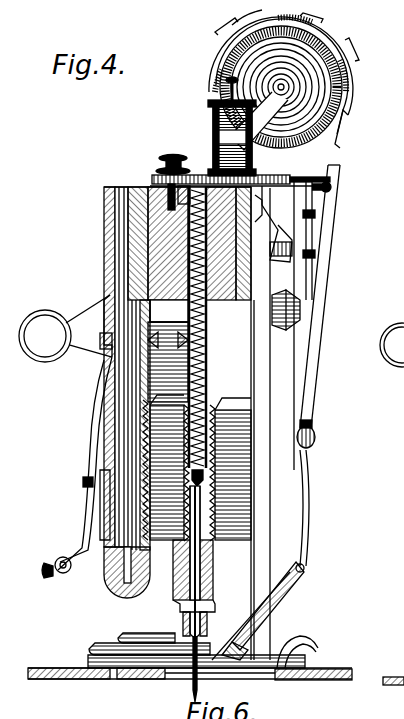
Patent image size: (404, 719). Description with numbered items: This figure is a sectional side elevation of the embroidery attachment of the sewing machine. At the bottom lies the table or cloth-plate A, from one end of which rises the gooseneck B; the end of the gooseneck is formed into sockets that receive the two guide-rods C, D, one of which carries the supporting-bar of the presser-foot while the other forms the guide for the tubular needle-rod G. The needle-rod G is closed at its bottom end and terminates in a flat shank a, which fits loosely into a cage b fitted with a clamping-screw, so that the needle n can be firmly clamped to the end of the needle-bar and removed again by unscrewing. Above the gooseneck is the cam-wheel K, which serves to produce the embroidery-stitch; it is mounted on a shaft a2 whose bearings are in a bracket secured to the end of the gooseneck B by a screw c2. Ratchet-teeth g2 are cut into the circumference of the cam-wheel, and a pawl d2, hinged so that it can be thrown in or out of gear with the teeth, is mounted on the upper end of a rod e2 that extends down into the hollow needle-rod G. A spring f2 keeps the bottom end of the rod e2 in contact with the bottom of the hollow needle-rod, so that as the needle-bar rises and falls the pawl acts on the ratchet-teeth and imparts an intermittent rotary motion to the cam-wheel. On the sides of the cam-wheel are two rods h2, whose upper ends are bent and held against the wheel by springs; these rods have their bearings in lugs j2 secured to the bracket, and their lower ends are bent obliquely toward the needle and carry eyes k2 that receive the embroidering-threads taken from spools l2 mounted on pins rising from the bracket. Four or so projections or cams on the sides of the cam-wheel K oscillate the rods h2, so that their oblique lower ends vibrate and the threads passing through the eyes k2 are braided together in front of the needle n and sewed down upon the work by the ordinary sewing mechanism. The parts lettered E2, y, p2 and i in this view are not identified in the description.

The cam-wheel K is at (328, 98).
The shaft a2 is at (300, 72).
The ratchet-teeth g2 is at (244, 22).
The spools l2 is at (208, 140).
The pawl d2 is at (222, 150).
The screw c2 is at (166, 160).
The rod e2 is at (170, 182).
The gooseneck B is at (168, 246).
The guide-rod C is at (169, 311).
The guide-rod D is at (168, 352).
The spring E2 is at (145, 477).
The needle-rod G is at (205, 508).
The flat shank a is at (187, 631).
The needle n is at (202, 669).
The base casting y is at (133, 676).
The table or cloth-plate A is at (70, 681).
The lugs j2 is at (326, 185).
The connecting rod p2 is at (308, 336).
The lever i is at (281, 258).
The cage b is at (251, 203).
The rods h2 is at (242, 572).
The eyes k2 is at (282, 696).
The spring f2 is at (196, 364).